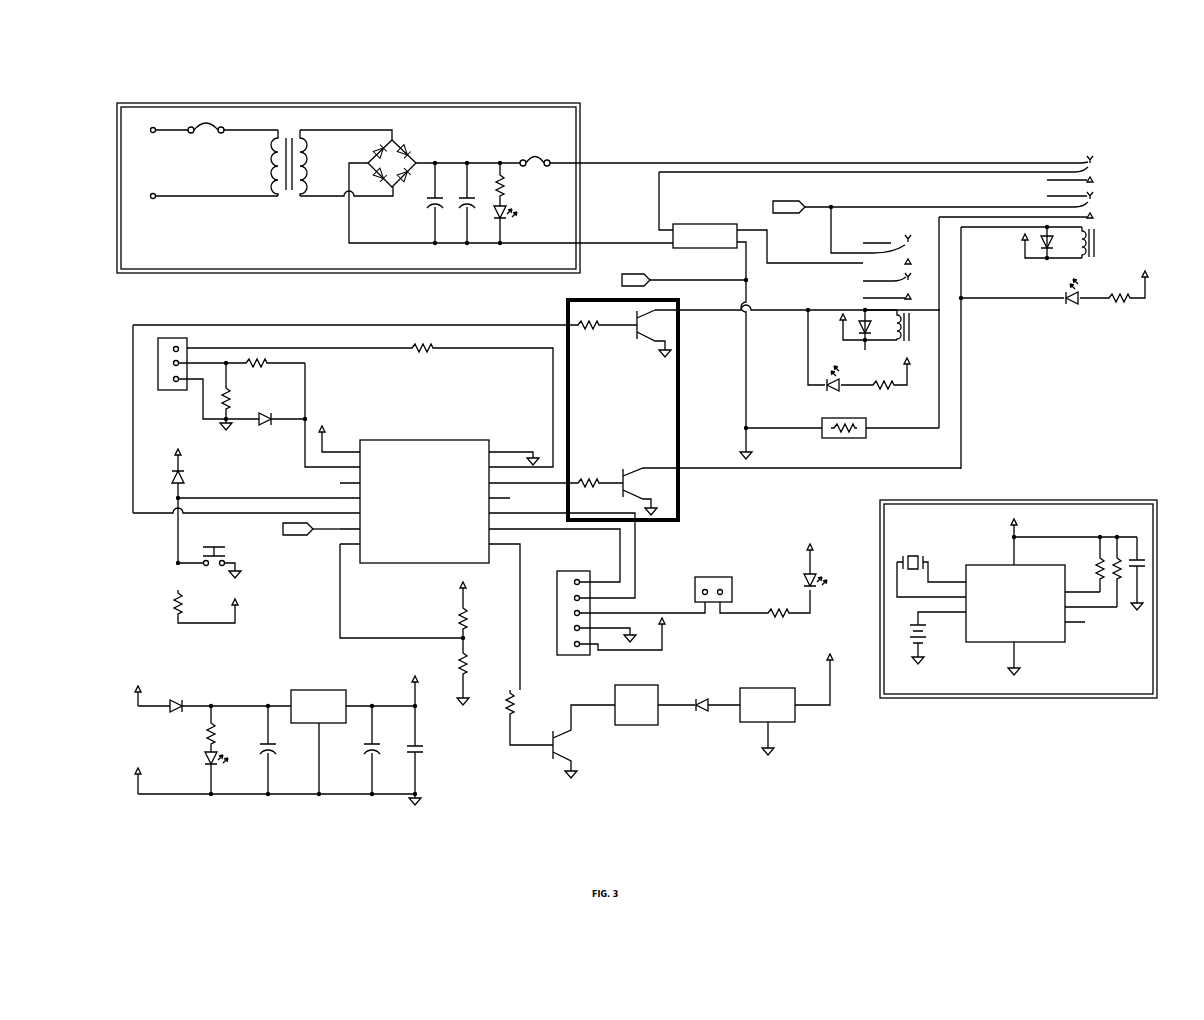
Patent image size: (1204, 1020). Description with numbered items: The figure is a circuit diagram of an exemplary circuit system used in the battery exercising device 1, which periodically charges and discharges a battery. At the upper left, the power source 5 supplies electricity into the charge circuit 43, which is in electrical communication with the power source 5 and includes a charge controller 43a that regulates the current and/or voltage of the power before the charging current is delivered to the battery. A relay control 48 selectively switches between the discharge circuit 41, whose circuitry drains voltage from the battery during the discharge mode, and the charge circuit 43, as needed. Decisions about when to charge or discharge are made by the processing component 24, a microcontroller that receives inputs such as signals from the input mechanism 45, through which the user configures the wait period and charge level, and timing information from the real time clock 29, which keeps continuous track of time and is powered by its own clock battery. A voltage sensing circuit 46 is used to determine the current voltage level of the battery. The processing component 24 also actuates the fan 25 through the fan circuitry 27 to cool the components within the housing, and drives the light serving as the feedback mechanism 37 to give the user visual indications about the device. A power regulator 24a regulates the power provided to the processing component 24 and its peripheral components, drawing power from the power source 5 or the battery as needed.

The battery exercising device 1 is at (607, 444).
The power source 5 is at (212, 115).
The processing component 24 is at (294, 478).
The power regulator 24a is at (289, 765).
The fan 25 is at (669, 770).
The fan circuitry 27 is at (575, 780).
The real time clock 29 is at (1018, 663).
The feedback mechanism 37 is at (781, 681).
The discharge circuit 41 is at (947, 400).
The charge circuit 43 is at (602, 152).
The charge controller 43a is at (742, 263).
The input mechanism 45 is at (194, 346).
The voltage sensing circuit 46 is at (465, 711).
The relay control 48 is at (547, 303).